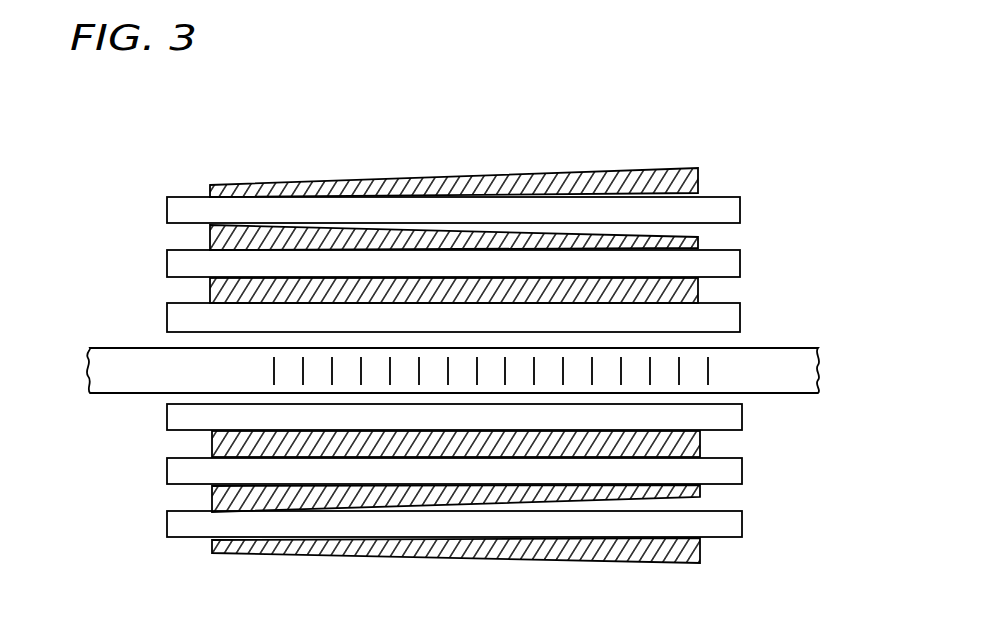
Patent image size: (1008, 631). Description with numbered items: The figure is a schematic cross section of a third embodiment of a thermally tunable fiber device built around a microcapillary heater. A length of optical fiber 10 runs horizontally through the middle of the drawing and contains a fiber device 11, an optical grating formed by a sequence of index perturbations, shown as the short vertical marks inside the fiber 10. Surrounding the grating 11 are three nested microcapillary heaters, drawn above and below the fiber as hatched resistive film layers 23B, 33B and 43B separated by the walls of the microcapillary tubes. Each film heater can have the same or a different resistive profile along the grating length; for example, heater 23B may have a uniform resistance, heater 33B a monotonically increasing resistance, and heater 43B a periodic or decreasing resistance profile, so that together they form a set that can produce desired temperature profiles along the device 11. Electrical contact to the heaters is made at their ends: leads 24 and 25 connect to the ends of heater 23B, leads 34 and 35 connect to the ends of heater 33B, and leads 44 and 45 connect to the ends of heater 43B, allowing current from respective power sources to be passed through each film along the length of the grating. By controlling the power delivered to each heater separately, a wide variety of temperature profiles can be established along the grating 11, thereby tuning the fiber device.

The optical fiber 10 is at (432, 397).
The fiber device 11 is at (172, 371).
The resistive film heater 23B is at (465, 277).
The lead 24 is at (208, 297).
The lead 25 is at (700, 292).
The nested microcapillary heater 33B is at (528, 231).
The left electrode of layer 33B 34 is at (210, 240).
The right electrode of layer 33B 35 is at (702, 238).
The nested microcapillary heater 43B is at (583, 174).
The left electrode of layer 43B 44 is at (210, 185).
The right electrode of layer 43B 45 is at (700, 182).